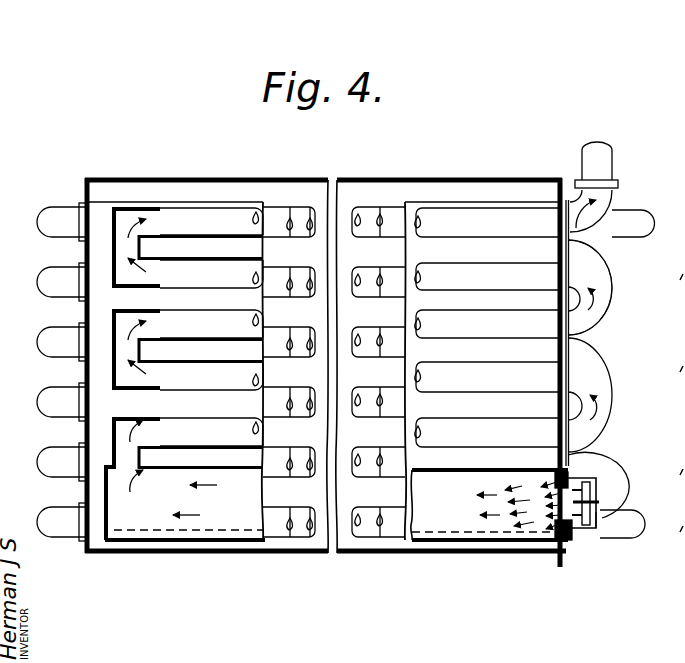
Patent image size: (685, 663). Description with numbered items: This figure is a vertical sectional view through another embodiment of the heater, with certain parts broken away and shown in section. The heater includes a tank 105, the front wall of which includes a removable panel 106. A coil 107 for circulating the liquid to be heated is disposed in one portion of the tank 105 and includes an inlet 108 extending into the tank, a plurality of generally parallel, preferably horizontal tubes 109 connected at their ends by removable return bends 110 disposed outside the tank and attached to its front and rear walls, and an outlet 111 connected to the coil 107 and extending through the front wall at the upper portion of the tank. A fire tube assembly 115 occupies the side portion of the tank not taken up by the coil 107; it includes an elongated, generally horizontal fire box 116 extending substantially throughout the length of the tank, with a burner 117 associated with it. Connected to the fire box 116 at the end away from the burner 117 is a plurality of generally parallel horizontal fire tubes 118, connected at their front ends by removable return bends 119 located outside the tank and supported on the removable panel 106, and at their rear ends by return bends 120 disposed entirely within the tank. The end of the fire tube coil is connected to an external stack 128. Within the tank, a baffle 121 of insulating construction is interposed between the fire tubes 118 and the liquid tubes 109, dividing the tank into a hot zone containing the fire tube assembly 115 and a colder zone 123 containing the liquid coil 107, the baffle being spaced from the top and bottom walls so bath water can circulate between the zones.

The tank 105 is at (118, 555).
The removable panel 106 is at (557, 556).
The coil 107 is at (384, 527).
The inlet 108 is at (627, 540).
The tubes 109 is at (367, 530).
The return bends 110 is at (600, 361).
The outlet 111 is at (630, 225).
The fire tube assembly 115 is at (212, 432).
The fire box 116 is at (478, 540).
The burner 117 is at (600, 492).
The fire tubes 118 is at (460, 386).
The return bends 119 is at (597, 407).
The return bends 120 is at (120, 348).
The baffle 121 is at (263, 520).
The colder zone 123 is at (315, 500).
The external stack 128 is at (600, 158).